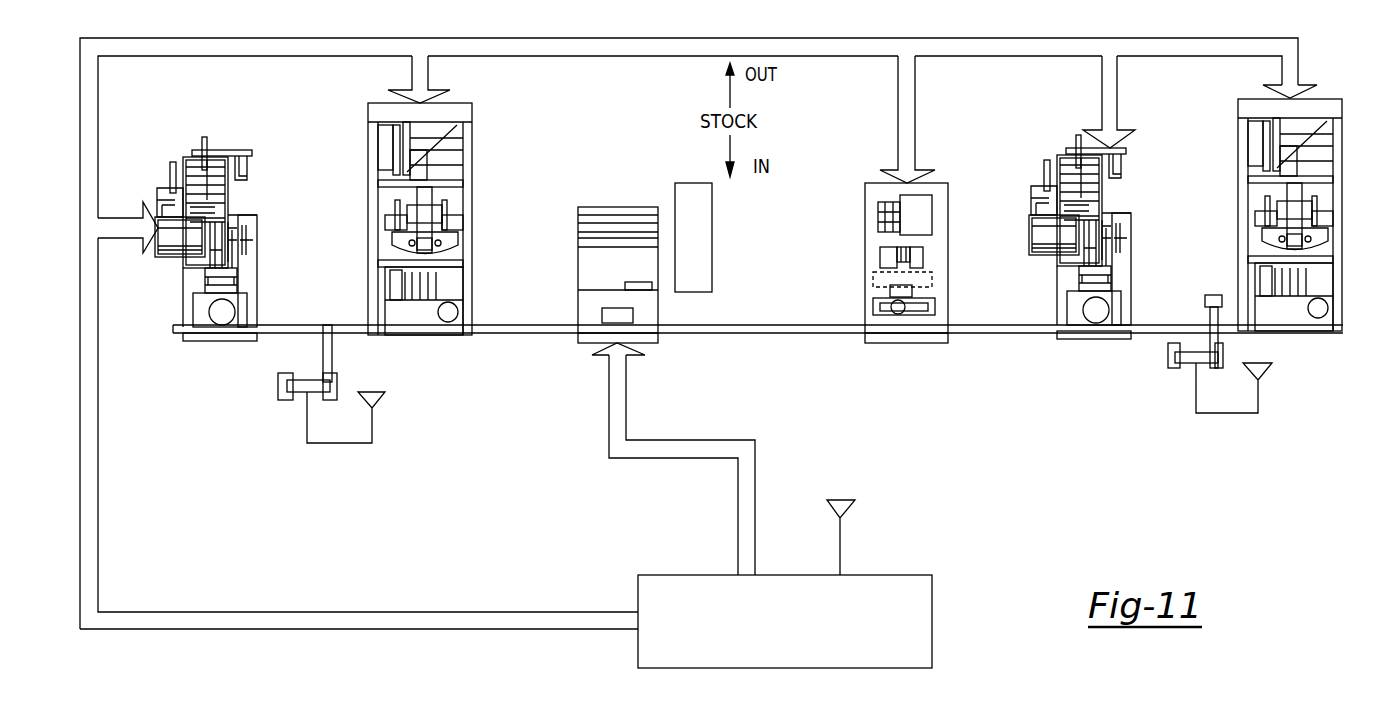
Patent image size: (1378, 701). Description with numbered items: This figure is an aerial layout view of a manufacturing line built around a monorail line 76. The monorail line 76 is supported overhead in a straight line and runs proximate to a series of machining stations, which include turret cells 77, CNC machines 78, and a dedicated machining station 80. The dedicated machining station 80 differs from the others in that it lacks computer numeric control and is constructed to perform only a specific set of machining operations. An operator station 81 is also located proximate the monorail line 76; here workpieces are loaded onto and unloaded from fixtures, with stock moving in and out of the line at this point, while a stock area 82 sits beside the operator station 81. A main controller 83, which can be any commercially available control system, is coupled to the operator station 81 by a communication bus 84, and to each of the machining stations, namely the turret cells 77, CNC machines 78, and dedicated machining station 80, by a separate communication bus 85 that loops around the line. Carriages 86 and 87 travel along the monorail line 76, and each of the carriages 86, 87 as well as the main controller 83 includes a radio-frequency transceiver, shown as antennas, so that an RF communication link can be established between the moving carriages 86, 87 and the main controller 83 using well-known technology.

The monorail line 76 is at (988, 335).
The turret cell 77 is at (183, 310).
The CNC machine 78 is at (473, 160).
The dedicated machining station 80 is at (948, 203).
The operator station 81 is at (578, 272).
The stock storage 82 is at (712, 250).
The main controller 83 is at (932, 622).
The communication bus 84 is at (738, 504).
The communication bus 85 is at (374, 612).
The carriage 86 is at (288, 400).
The carriage 87 is at (1168, 357).